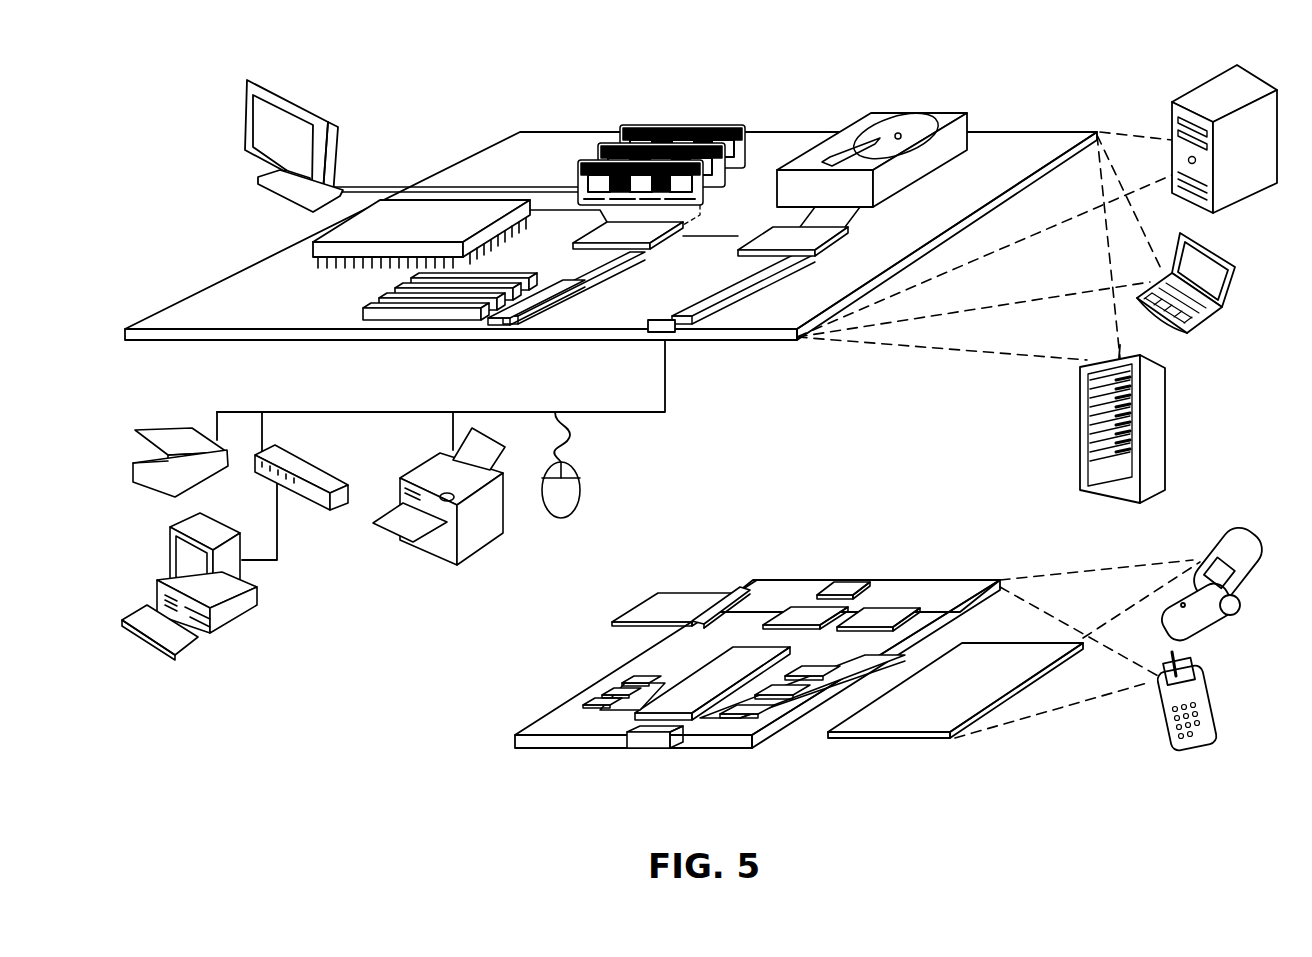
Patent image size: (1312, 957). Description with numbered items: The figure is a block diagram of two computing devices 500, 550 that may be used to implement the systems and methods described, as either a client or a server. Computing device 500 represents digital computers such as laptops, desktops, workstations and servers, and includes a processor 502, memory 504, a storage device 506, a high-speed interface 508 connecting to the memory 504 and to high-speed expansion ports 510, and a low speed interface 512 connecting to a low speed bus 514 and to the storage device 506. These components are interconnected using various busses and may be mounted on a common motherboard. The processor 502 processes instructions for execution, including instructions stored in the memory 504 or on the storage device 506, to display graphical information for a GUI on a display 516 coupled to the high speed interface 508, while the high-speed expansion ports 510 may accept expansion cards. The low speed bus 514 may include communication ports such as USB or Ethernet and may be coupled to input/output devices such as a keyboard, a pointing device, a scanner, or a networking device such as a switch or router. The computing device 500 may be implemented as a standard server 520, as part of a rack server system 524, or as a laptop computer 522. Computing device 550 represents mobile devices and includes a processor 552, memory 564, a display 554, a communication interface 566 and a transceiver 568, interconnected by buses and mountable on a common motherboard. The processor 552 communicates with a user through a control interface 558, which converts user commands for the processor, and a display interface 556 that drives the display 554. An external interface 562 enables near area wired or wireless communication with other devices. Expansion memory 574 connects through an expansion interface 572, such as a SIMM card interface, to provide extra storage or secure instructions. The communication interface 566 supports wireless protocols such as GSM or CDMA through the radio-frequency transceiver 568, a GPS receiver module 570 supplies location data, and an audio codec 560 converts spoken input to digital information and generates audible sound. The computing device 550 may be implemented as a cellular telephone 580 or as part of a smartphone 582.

The computing device 500 is at (436, 102).
The processor 502 is at (318, 248).
The memory 504 is at (633, 128).
The storage device 506 is at (858, 112).
The high-speed interface 508 is at (603, 236).
The high-speed expansion ports 510 is at (378, 306).
The low speed interface 512 is at (775, 228).
The low speed bus 514 is at (677, 331).
The display 516 is at (250, 82).
The standard server 520 is at (1172, 120).
The laptop computer 522 is at (1240, 260).
The rack server system 524 is at (1082, 452).
The computing device 550 is at (488, 748).
The processor 552 is at (687, 705).
The display 554 is at (920, 725).
The display interface 556 is at (755, 714).
The control interface 558 is at (788, 698).
The audio codec 560 is at (812, 674).
The external interface 562 is at (653, 737).
The memory 564 is at (607, 693).
The communication interface 566 is at (802, 617).
The transceiver 568 is at (877, 615).
The GPS receiver module 570 is at (852, 580).
The expansion interface 572 is at (733, 592).
The expansion memory 574 is at (667, 592).
The cellular telephone 580 is at (1213, 533).
The smartphone 582 is at (1160, 707).